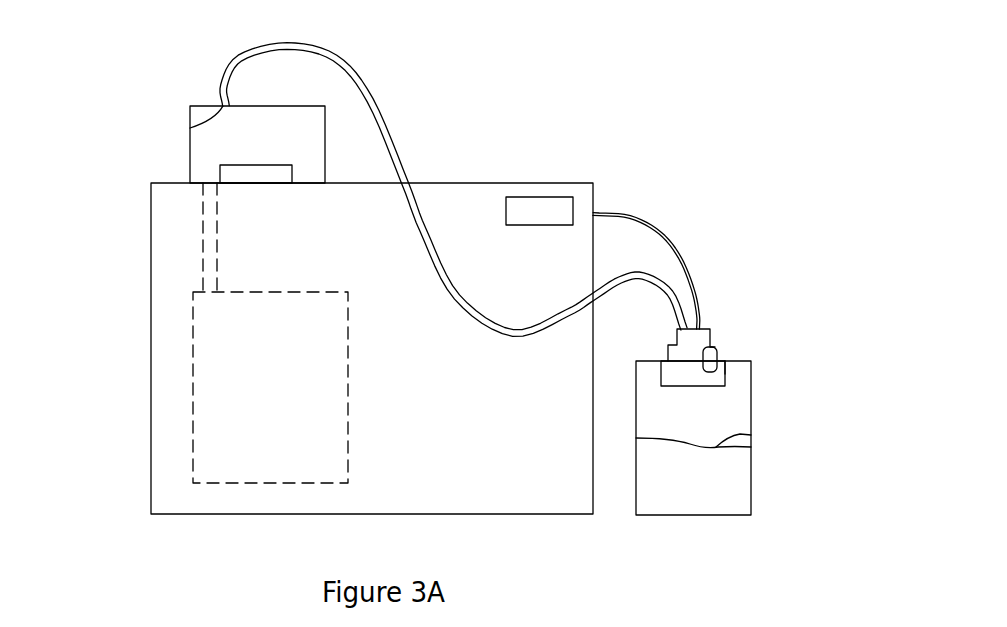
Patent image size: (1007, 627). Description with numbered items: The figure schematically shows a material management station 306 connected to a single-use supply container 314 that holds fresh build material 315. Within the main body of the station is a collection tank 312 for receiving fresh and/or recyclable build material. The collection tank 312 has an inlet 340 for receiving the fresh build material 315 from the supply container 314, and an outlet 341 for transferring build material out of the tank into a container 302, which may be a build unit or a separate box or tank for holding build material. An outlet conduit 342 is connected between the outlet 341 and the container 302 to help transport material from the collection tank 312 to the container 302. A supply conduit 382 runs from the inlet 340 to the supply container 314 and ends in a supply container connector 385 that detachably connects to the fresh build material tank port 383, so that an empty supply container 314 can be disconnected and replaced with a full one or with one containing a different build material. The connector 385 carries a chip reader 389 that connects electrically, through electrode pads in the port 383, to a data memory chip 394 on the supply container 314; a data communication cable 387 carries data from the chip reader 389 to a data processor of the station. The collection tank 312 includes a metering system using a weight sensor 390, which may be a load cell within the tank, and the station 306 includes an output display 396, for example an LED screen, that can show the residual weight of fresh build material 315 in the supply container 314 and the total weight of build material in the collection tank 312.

The material management station 306 is at (560, 70).
The container 302 is at (193, 443).
The inlet 340 is at (190, 129).
The collection tank 312 is at (207, 105).
The weight sensor 390 is at (237, 177).
The outlet 341 is at (210, 193).
The outlet conduit 342 is at (203, 270).
The supply conduit 382 is at (405, 152).
The data communication cable 387 is at (675, 237).
The output display 396 is at (560, 206).
The supply container connector 385 is at (712, 328).
The chip reader 389 is at (717, 352).
The data memory chip 394 is at (725, 365).
The fresh build material tank port 383 is at (725, 385).
The supply container 314 is at (751, 515).
The fresh build material 315 is at (751, 435).